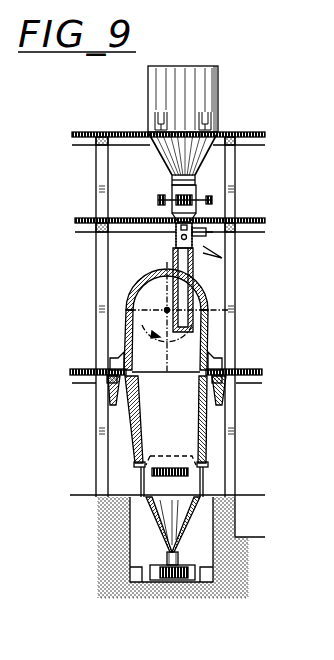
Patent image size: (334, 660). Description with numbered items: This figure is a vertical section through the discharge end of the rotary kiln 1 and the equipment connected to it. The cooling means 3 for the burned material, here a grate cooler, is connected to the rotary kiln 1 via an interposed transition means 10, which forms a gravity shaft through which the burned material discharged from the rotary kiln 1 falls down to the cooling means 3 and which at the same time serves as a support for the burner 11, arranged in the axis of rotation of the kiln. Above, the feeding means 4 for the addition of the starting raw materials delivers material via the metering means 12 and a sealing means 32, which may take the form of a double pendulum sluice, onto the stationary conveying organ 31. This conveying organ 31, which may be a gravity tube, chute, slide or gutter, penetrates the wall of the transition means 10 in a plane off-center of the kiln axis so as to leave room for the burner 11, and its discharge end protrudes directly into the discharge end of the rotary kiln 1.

The rotary kiln 1 is at (132, 283).
The cooling means 3 is at (190, 483).
The feeding means 4 is at (215, 110).
The transition means 10 is at (214, 360).
The burner 11 is at (152, 312).
The metering means 12 is at (197, 198).
The stationary conveying organ 31 is at (196, 312).
The sealing means 32 is at (201, 230).